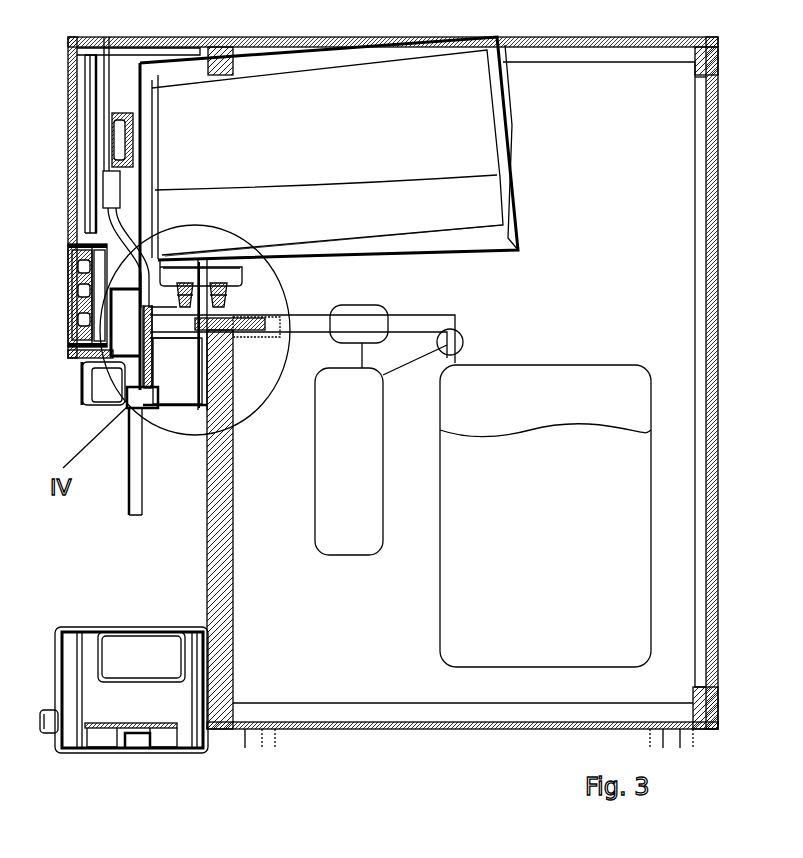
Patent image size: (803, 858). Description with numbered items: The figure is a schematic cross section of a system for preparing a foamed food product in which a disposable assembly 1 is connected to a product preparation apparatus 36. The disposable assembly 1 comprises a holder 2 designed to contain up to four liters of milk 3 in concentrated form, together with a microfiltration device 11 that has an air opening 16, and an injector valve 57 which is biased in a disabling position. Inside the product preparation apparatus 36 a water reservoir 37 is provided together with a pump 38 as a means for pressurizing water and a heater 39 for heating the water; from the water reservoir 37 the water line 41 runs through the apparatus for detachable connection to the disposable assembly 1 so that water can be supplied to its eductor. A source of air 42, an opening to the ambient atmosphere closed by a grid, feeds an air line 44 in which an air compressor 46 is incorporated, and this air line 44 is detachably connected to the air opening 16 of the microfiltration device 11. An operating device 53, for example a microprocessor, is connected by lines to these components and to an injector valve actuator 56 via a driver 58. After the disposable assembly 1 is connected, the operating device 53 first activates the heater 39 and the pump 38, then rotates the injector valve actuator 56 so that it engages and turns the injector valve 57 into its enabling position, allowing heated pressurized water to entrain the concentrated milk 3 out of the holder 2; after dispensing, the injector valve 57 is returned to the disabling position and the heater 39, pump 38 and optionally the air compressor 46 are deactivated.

The disposable assembly 1 is at (520, 115).
The holder 2 is at (520, 220).
The milk 3 is at (334, 227).
The microfiltration device 11 is at (135, 318).
The air opening 16 is at (100, 270).
The product preparation apparatus 36 is at (418, 692).
The water reservoir 37 is at (545, 516).
The pump 38 is at (463, 340).
The heater 39 is at (368, 306).
The water line 41 is at (305, 315).
The source of air 42 is at (104, 40).
The air line 44 is at (102, 107).
The air compressor 46 is at (110, 191).
The operating device 53 is at (349, 461).
The injector valve actuator 56 is at (247, 317).
The injector valve 57 is at (213, 330).
The driver 58 is at (253, 337).